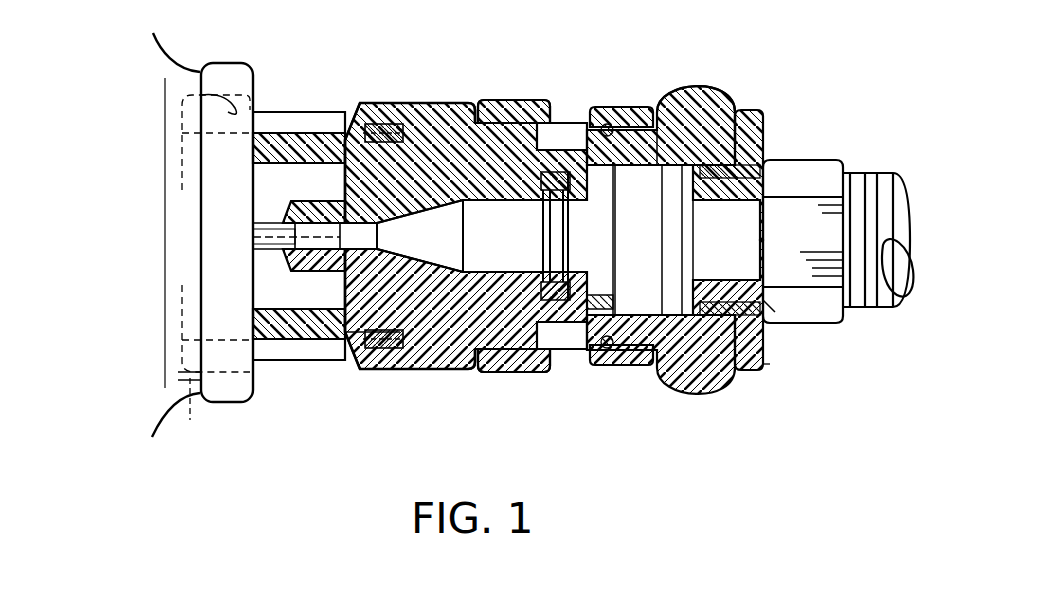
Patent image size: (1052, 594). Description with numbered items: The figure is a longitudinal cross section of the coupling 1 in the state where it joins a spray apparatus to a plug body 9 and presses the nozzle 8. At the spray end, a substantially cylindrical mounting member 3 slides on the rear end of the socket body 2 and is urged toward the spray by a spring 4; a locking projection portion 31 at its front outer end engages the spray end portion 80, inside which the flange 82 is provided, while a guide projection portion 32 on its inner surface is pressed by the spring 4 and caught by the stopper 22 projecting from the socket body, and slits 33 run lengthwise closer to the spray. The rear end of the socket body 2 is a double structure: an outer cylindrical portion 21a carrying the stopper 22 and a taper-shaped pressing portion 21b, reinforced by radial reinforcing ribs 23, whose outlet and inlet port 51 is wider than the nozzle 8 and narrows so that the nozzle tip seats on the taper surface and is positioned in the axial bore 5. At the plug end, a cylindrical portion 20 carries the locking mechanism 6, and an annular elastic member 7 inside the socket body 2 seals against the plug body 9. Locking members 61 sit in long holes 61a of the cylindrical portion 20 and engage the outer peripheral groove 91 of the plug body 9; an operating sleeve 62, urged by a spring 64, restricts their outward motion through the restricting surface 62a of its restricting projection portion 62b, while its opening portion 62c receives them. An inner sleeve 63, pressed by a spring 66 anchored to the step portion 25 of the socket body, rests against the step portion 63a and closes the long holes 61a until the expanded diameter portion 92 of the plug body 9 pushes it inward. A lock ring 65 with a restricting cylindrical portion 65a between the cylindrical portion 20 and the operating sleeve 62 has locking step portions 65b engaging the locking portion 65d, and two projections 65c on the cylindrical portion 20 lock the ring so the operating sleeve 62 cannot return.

The coupling 1 is at (842, 50).
The socket body 2 is at (435, 133).
The mounting member 3 is at (395, 97).
The spring 4 is at (402, 347).
The axial bore 5 is at (421, 258).
The locking mechanism 6 is at (772, 379).
The annular elastic member 7 is at (557, 228).
The nozzle 8 is at (262, 232).
The plug body 9 is at (770, 215).
The cylindrical portion 20 is at (510, 360).
The outer cylindrical portion 21a is at (255, 153).
The pressing portion 21b is at (325, 198).
The stopper 22 is at (268, 327).
The reinforcing ribs 23 is at (352, 307).
The step portion 25 is at (622, 128).
The locking projection portion 31 is at (194, 413).
The guide projection portion 32 is at (347, 136).
The slits 33 is at (282, 118).
The outlet and inlet port 51 is at (257, 262).
The locking member 61 is at (753, 130).
The long hole 61a is at (742, 200).
The operating sleeve 62 is at (673, 387).
The restricting surface 62a is at (663, 128).
The restricting projection portion 62b is at (698, 128).
The opening portion 62c is at (768, 147).
The inner sleeve 63 is at (630, 333).
The step portion 63a is at (763, 313).
The spring 64 is at (607, 349).
The lock ring 65 is at (512, 355).
The restricting cylindrical portion 65a is at (600, 124).
The locking step portion 65b is at (493, 363).
The projection 65c is at (570, 130).
The locking portion 65d is at (526, 106).
The spring 66 is at (585, 337).
The spray end portion 80 is at (233, 68).
The flange 82 is at (217, 372).
The outer peripheral groove 91 is at (790, 205).
The expanded diameter portion 92 is at (773, 310).